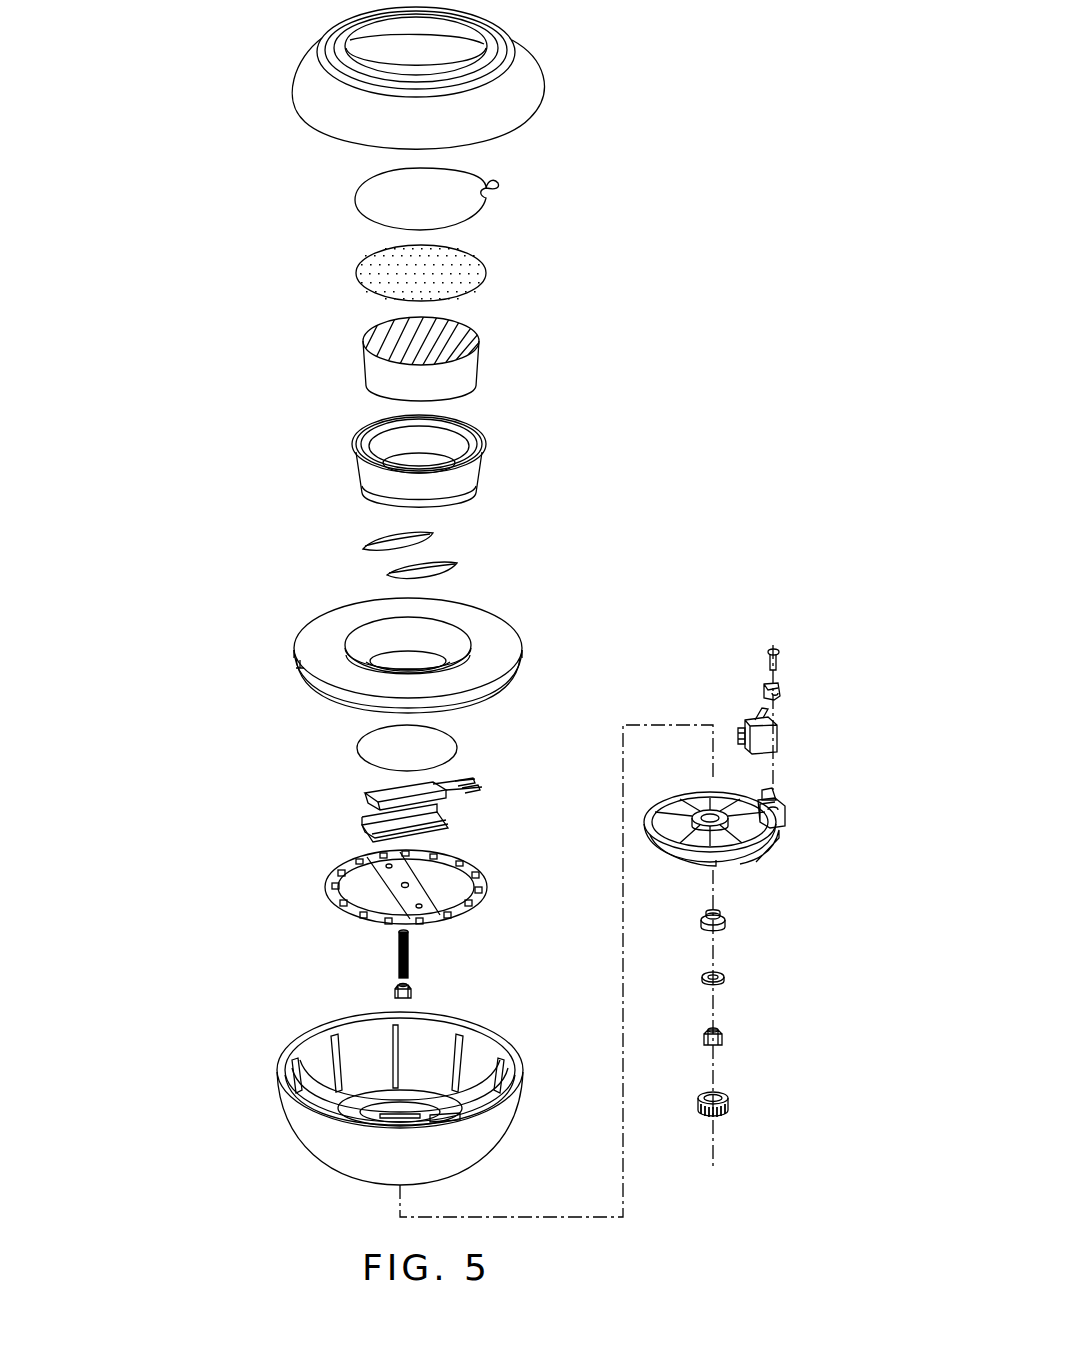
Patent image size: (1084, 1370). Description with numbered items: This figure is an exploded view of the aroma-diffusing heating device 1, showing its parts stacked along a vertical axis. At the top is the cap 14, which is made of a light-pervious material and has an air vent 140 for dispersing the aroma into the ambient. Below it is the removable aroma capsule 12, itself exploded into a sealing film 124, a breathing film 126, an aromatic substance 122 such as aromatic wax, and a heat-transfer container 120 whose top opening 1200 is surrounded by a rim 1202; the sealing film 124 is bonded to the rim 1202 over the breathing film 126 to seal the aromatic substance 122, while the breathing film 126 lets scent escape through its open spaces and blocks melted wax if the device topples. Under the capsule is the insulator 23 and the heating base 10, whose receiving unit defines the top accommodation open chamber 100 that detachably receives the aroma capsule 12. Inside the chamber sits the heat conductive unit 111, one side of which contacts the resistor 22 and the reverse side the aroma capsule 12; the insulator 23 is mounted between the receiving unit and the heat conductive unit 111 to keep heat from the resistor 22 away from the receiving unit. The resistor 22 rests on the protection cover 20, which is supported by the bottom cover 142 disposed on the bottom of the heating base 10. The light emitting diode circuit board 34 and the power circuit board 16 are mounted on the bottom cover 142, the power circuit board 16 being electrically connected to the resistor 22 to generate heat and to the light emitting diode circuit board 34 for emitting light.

The aroma-diffusing heating device 1 is at (664, 214).
The heating base 10 is at (543, 655).
The top accommodation open chamber 100 is at (368, 632).
The heat conductive unit 111 is at (372, 738).
The aroma capsule 12 is at (244, 498).
The heat-transfer container 120 is at (368, 478).
The top opening 1200 is at (446, 448).
The rim 1202 is at (487, 446).
The aromatic substance 122 is at (370, 367).
The sealing film 124 is at (368, 210).
The breathing film 126 is at (358, 268).
The cap 14 is at (310, 66).
The air vent 140 is at (452, 60).
The bottom cover 142 is at (778, 845).
The power circuit board 16 is at (776, 740).
The protection cover 20 is at (370, 828).
The resistor 22 is at (380, 796).
The insulator 23 is at (435, 535).
The light emitting diode circuit board 34 is at (332, 880).